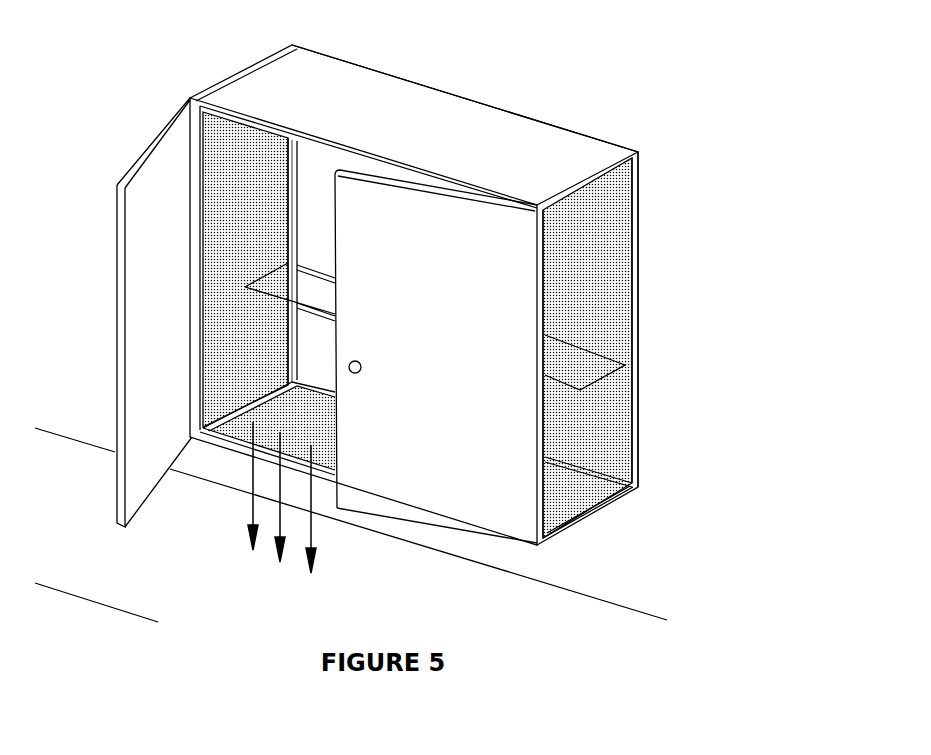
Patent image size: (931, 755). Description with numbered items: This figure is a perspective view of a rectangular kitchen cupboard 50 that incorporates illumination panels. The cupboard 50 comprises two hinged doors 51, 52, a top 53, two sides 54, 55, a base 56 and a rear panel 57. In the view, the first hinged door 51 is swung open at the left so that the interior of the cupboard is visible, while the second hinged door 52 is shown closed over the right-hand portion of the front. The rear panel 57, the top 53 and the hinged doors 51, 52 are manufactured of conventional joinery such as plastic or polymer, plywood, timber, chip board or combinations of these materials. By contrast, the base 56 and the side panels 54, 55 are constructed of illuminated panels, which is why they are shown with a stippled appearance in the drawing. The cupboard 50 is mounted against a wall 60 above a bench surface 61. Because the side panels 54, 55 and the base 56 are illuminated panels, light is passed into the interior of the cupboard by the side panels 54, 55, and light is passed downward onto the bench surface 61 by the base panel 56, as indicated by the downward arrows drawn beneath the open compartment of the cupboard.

The kitchen cupboard 50 is at (568, 92).
The hinged door 51 is at (133, 300).
The hinged door 52 is at (443, 495).
The top 53 is at (373, 107).
The side panel 54 is at (592, 275).
The side panel 55 is at (225, 147).
The base 56 is at (567, 497).
The rear panel 57 is at (637, 410).
The wall 60 is at (680, 102).
The bench surface 61 is at (118, 580).